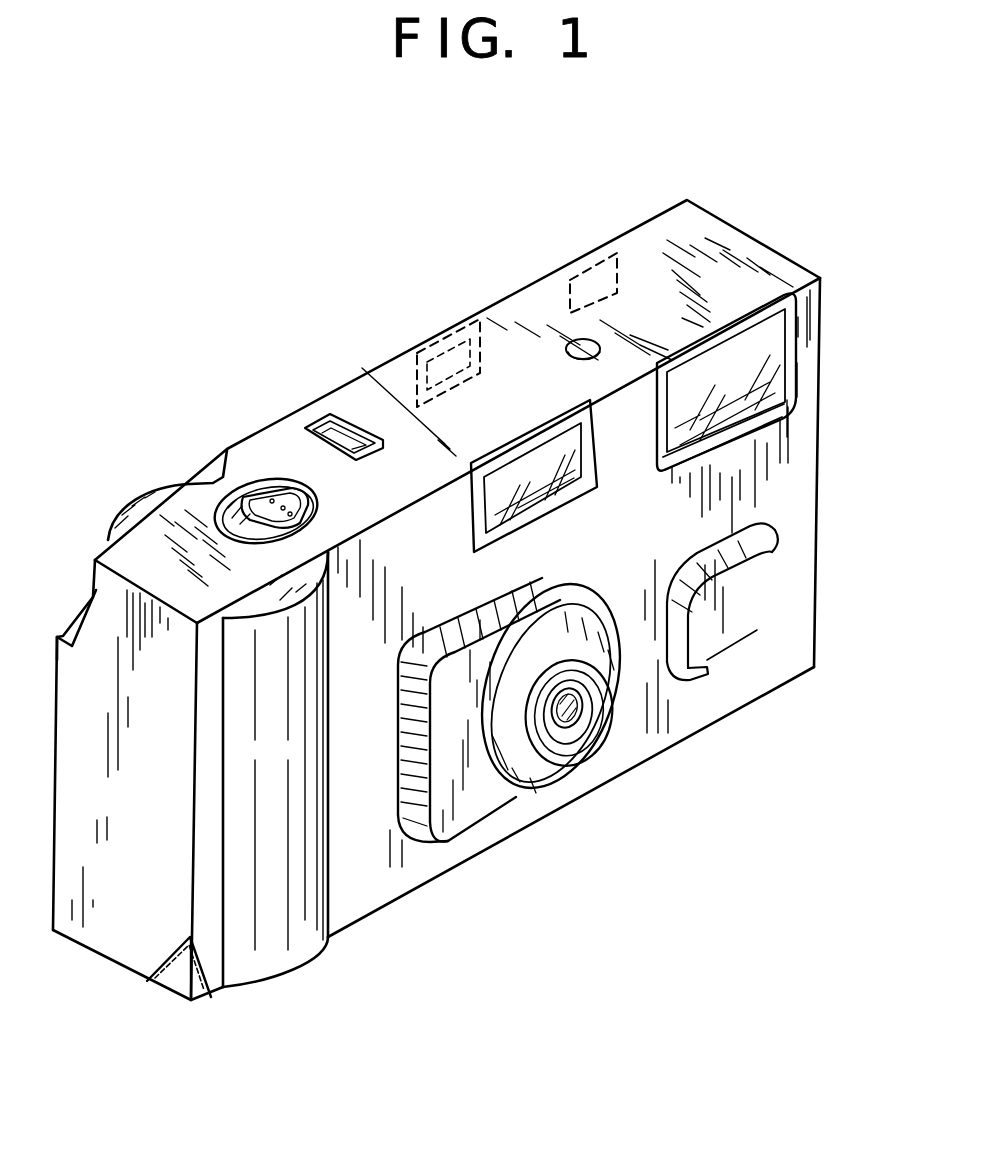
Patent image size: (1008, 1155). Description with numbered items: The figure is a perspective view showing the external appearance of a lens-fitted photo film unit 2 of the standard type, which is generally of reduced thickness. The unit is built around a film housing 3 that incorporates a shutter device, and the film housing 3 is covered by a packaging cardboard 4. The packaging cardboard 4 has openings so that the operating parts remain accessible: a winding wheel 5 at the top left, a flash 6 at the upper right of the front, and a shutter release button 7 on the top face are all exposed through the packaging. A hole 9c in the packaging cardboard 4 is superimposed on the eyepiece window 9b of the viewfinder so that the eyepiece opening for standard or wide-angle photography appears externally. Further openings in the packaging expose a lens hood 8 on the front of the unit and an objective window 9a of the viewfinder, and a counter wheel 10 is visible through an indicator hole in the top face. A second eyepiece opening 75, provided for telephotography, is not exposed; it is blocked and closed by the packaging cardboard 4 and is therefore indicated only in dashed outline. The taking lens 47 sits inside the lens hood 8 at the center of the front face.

The lens-fitted photo film unit 2 is at (508, 252).
The film housing 3 is at (193, 1002).
The packaging cardboard 4 is at (127, 950).
The winding wheel 5 is at (153, 490).
The flash 6 is at (767, 363).
The shutter release button 7 is at (283, 490).
The lens hood 8 is at (472, 808).
The objective window 9a is at (598, 452).
The eyepiece window 9b is at (447, 333).
The hole 9c is at (397, 373).
The counter wheel 10 is at (345, 440).
The taking lens 47 is at (573, 717).
The eyepiece opening 75 is at (587, 268).